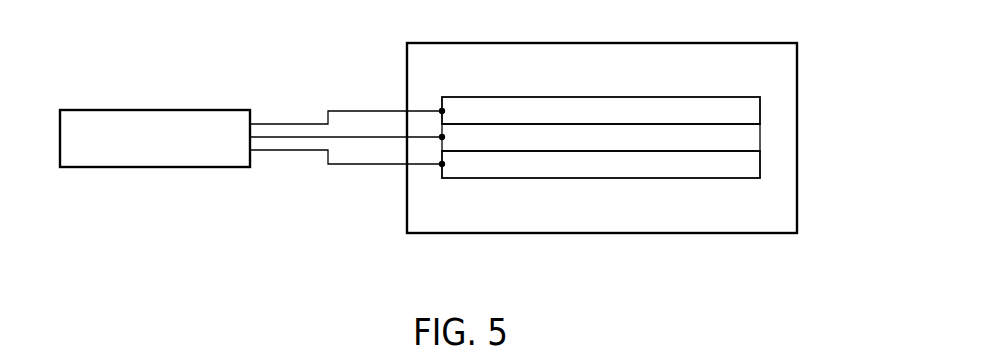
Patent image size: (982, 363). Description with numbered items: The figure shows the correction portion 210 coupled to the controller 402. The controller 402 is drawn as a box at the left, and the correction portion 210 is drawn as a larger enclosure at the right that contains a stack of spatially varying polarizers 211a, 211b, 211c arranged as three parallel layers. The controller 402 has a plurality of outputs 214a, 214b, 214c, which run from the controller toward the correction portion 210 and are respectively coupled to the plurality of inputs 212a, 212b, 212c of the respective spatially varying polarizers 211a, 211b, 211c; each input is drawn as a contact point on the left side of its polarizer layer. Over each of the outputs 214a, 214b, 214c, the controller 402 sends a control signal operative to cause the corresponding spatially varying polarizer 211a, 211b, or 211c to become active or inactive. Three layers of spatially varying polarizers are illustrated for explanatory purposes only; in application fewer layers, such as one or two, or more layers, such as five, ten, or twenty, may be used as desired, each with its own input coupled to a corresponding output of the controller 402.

The controller 402 is at (148, 108).
The output 214a is at (252, 123).
The output 214b is at (253, 138).
The output 214c is at (253, 153).
The correction portion 210 is at (797, 68).
The spatially varying polarizer 211a is at (760, 111).
The spatially varying polarizer 211b is at (760, 138).
The spatially varying polarizer 211c is at (760, 165).
The input 212a is at (440, 110).
The input 212b is at (440, 137).
The input 212c is at (440, 166).